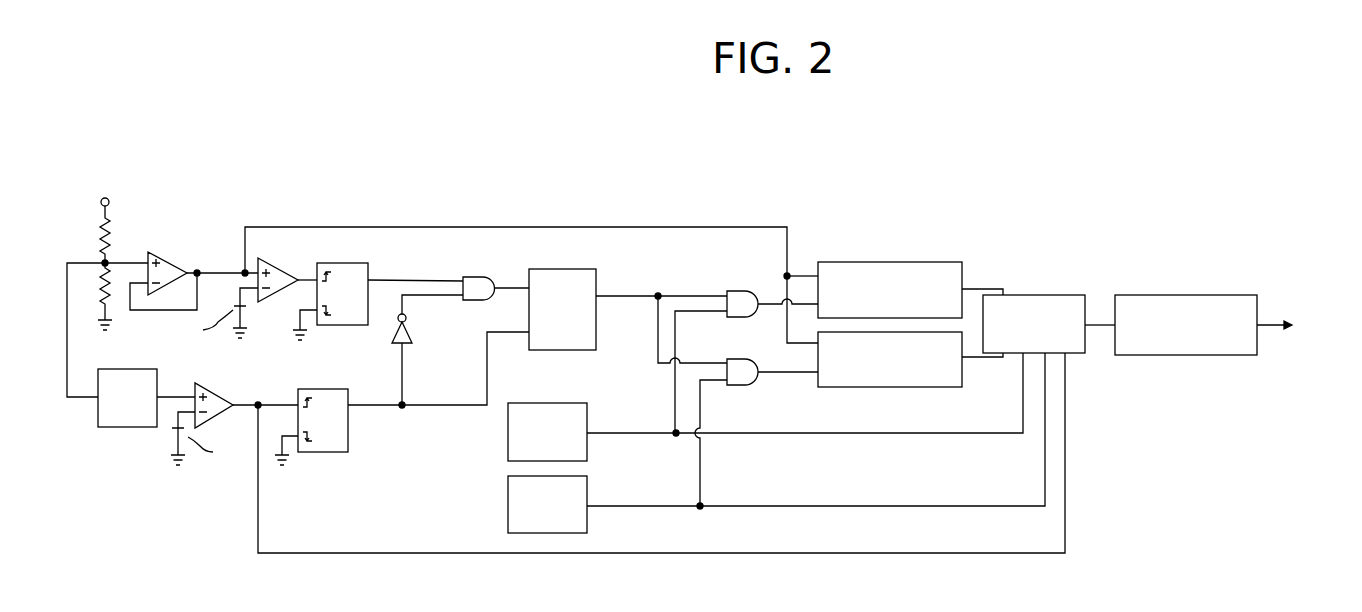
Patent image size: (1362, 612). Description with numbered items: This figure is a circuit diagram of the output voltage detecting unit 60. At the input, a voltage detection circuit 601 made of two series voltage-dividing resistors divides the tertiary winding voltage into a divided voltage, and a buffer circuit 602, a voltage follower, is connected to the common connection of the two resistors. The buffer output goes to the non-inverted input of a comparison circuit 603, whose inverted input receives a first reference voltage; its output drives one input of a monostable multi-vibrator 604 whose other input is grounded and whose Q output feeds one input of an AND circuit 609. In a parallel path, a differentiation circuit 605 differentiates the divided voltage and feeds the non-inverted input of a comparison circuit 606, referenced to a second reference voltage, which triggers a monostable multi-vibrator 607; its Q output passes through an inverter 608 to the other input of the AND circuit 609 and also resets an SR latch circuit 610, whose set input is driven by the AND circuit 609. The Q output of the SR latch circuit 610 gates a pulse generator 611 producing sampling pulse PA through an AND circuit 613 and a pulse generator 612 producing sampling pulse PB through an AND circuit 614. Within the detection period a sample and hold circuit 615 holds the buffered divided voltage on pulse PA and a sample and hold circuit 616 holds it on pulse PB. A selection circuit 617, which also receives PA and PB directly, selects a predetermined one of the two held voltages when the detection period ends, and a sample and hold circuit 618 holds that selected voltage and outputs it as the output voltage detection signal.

The output voltage detecting unit 60 is at (721, 208).
The voltage detection circuit 601 is at (128, 212).
The buffer circuit 602 is at (167, 258).
The comparison circuit 603 is at (277, 263).
The monostable multi-vibrator 604 is at (368, 265).
The differentiation circuit 605 is at (120, 428).
The comparison circuit 606 is at (217, 392).
The monostable multi-vibrator 607 is at (335, 389).
The inverter 608 is at (412, 336).
The AND circuit 609 is at (480, 277).
The SR latch circuit 610 is at (596, 272).
The pulse generator 611 is at (508, 436).
The pulse generator 612 is at (508, 510).
The AND circuit 613 is at (735, 290).
The AND circuit 614 is at (745, 386).
The sample and hold circuit 615 is at (886, 262).
The sample and hold circuit 616 is at (888, 388).
The selection circuit 617 is at (1037, 295).
The sample and hold circuit 618 is at (1177, 295).